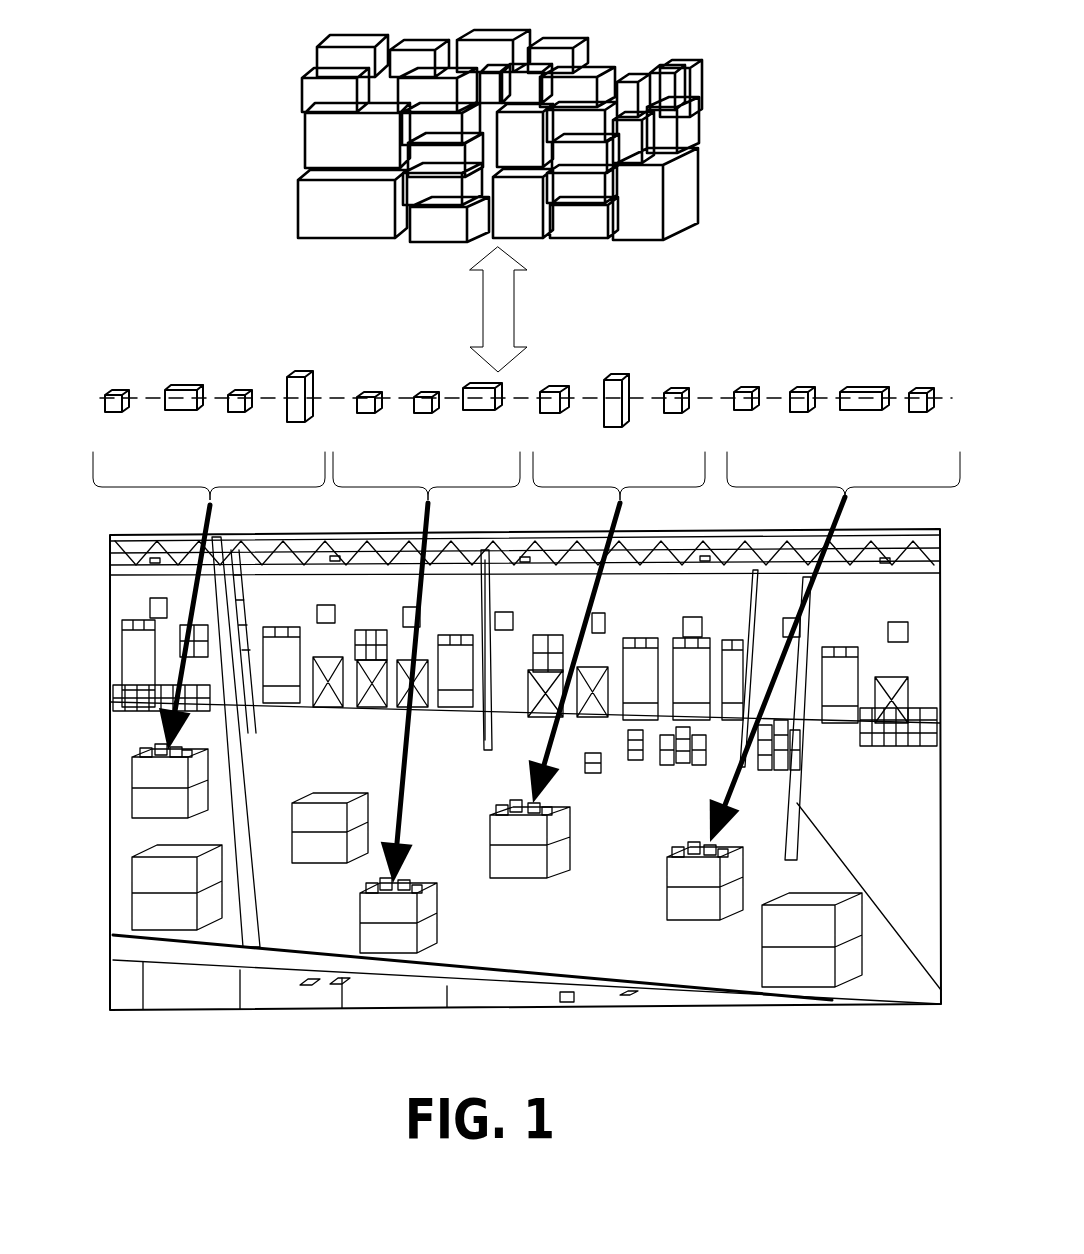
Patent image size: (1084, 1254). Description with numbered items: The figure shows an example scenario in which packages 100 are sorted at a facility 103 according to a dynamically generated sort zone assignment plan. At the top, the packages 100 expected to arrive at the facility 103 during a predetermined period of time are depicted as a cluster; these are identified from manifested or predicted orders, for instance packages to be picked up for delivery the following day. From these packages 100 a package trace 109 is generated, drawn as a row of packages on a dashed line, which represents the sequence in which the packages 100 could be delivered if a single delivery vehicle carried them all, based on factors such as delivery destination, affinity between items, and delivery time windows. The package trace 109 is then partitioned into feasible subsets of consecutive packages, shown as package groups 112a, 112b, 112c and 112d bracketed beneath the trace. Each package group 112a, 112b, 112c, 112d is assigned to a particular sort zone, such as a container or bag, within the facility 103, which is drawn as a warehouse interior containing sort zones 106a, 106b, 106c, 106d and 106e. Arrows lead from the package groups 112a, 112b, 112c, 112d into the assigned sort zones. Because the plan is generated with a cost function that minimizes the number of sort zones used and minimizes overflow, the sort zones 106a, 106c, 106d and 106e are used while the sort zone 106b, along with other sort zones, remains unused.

The packages 100 is at (268, 138).
The facility 103 is at (832, 1002).
The sort zone 106a is at (136, 752).
The sort zone 106b is at (338, 803).
The sort zone 106c is at (418, 884).
The sort zone 106d is at (508, 808).
The sort zone 106e is at (680, 851).
The package trace 109 is at (113, 367).
The package group 112a is at (223, 462).
The package group 112b is at (455, 462).
The package group 112c is at (648, 462).
The package group 112d is at (873, 462).